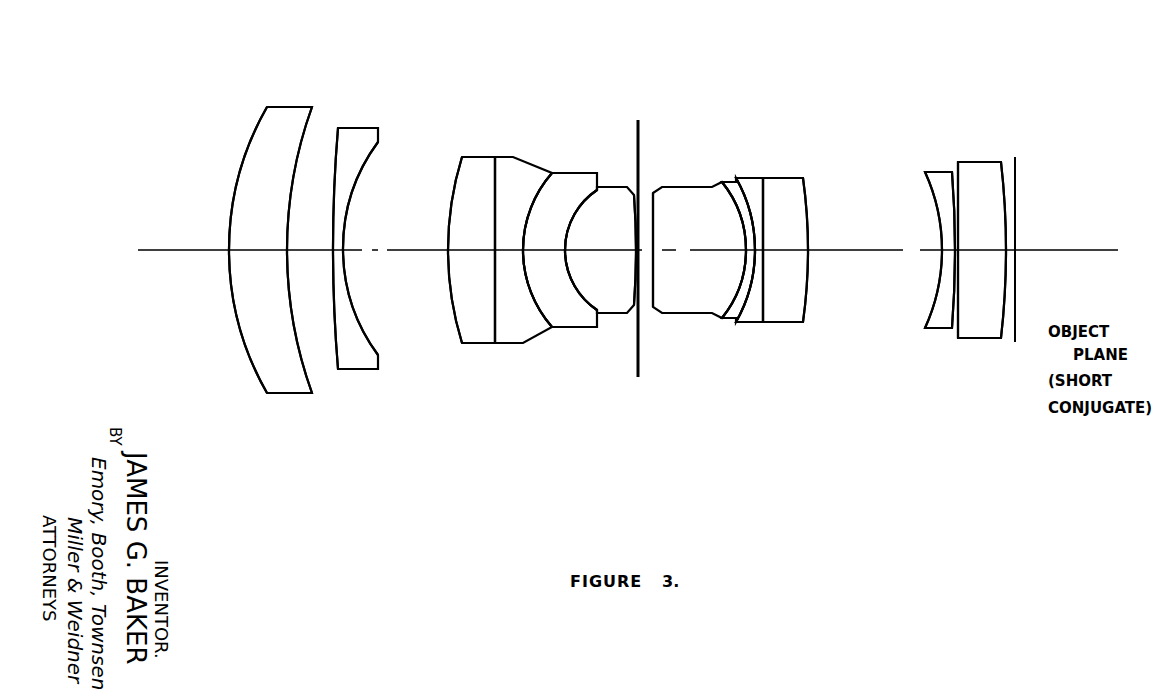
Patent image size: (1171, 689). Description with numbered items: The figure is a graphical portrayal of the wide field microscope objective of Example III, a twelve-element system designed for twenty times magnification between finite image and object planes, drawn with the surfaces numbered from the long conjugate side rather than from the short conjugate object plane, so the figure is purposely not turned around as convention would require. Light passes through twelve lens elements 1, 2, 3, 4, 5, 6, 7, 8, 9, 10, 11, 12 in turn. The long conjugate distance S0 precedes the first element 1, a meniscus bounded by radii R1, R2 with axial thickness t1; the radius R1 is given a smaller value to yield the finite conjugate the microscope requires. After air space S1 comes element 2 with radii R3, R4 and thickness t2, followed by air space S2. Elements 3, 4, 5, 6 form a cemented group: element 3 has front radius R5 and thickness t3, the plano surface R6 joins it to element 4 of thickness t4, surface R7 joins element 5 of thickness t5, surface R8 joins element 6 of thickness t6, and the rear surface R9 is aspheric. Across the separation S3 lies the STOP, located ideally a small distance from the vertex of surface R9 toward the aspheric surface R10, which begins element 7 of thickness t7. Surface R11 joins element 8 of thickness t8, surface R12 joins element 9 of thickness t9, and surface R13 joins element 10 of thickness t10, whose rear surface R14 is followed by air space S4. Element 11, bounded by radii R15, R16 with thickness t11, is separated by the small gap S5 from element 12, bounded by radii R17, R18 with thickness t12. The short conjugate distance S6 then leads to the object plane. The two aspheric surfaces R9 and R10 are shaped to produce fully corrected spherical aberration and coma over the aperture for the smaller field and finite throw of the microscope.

The lens element I 1 is at (270, 250).
The lens element II 2 is at (355, 248).
The lens element III 3 is at (471, 250).
The lens element IV 4 is at (523, 250).
The lens element V 5 is at (560, 250).
The lens element VI 6 is at (600, 250).
The lens element VII 7 is at (699, 250).
The lens element VIII 8 is at (738, 250).
The lens element IX 9 is at (749, 250).
The lens element X 10 is at (785, 250).
The lens element XI 11 is at (940, 250).
The lens element XII 12 is at (982, 250).
The radius of curvature R1 is at (240, 336).
The radius of curvature R2 is at (298, 355).
The radius of curvature R3 is at (333, 320).
The radius of curvature R4 is at (366, 337).
The radius of curvature R5 is at (450, 300).
The radius of curvature R6 is at (495, 285).
The radius of curvature R7 is at (535, 308).
The radius of curvature R8 is at (583, 305).
The radius of curvature R9 is at (633, 290).
The radius of curvature R10 is at (655, 303).
The radius of curvature R11 is at (723, 313).
The radius of curvature R12 is at (747, 293).
The radius of curvature R13 is at (763, 275).
The radius of curvature R14 is at (805, 303).
The radius of curvature R15 is at (937, 290).
The radius of curvature R16 is at (952, 310).
The radius of curvature R17 is at (962, 308).
The radius of curvature R18 is at (1003, 338).
The axial thickness t1 is at (258, 250).
The axial thickness t2 is at (335, 248).
The axial thickness t3 is at (475, 250).
The axial thickness t4 is at (508, 250).
The axial thickness t5 is at (553, 250).
The axial thickness t6 is at (587, 248).
The axial thickness t7 is at (670, 250).
The axial thickness t8 is at (722, 182).
The axial thickness t9 is at (738, 172).
The axial thickness t10 is at (778, 200).
The axial thickness t11 is at (940, 243).
The axial thickness t12 is at (973, 190).
The axial separation S0 is at (197, 250).
The axial separation S1 is at (309, 250).
The axial separation S2 is at (388, 250).
The axial separation S3 is at (642, 250).
The axial separation S4 is at (833, 250).
The axial separation S5 is at (957, 248).
The axial separation S6 is at (1015, 248).
The stop STOP is at (637, 318).